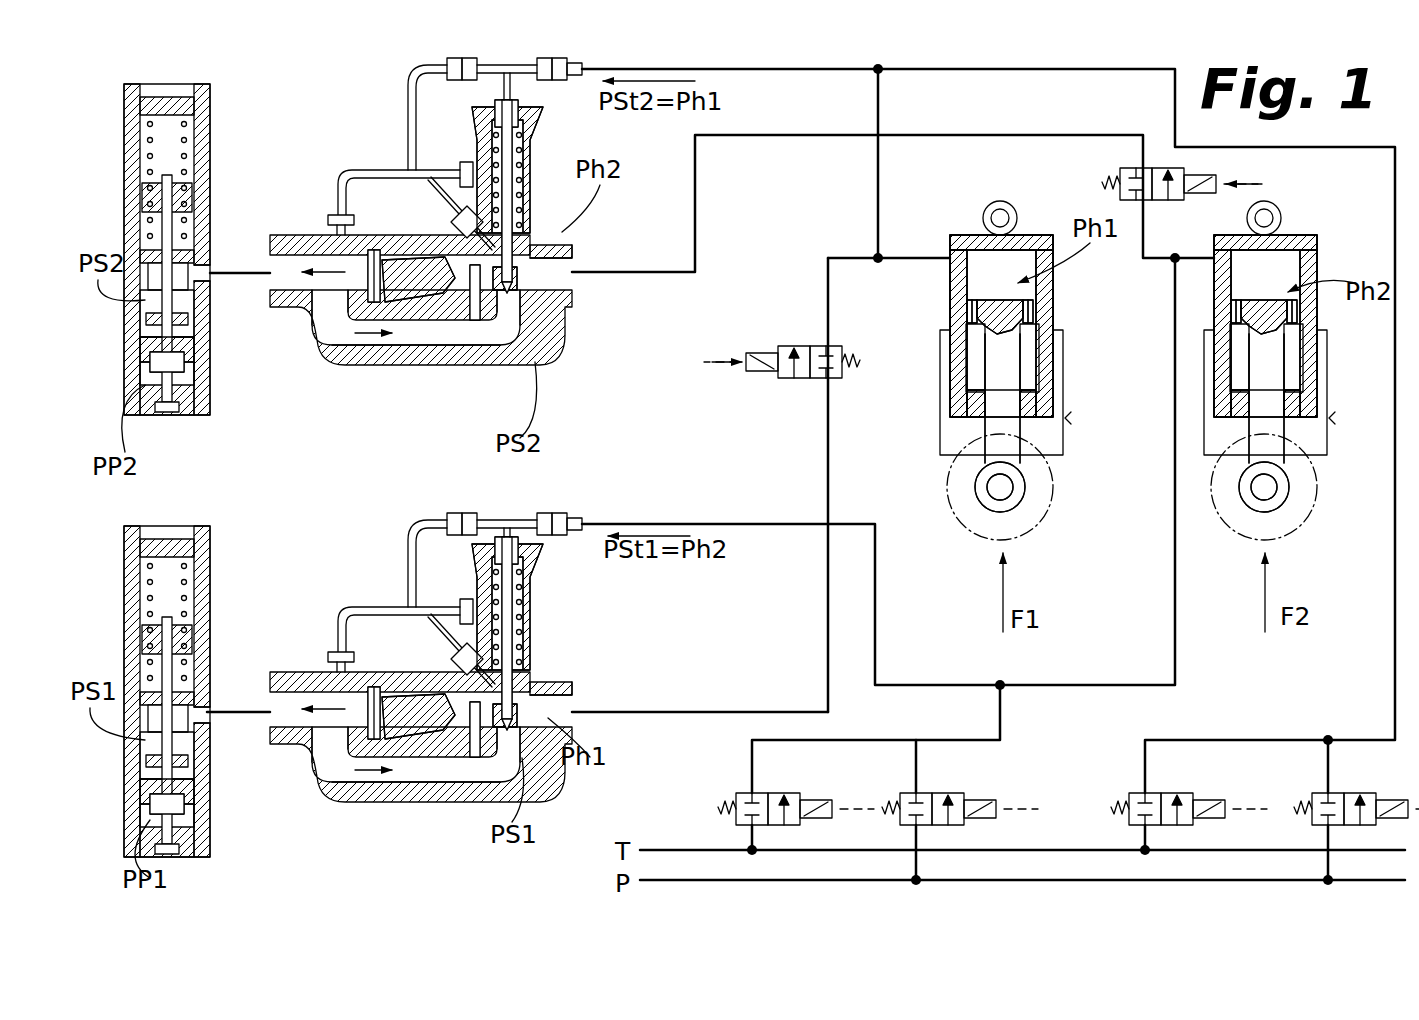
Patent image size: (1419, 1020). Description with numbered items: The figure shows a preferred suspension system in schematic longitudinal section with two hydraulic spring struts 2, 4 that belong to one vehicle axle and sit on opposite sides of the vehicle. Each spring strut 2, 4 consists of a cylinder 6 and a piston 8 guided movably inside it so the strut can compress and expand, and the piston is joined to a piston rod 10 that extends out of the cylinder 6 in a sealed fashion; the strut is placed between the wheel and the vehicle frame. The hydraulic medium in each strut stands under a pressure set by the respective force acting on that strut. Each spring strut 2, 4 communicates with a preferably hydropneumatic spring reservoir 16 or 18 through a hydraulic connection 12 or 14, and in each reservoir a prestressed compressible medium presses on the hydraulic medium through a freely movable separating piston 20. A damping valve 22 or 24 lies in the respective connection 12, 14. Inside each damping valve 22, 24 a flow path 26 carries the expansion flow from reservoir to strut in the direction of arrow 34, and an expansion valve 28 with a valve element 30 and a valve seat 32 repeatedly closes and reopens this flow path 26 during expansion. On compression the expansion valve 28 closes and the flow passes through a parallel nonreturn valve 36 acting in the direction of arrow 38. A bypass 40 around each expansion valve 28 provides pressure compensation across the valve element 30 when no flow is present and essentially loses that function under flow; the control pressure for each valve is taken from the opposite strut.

The hydraulic spring strut 2 is at (1072, 318).
The hydraulic spring strut 4 is at (1337, 300).
The cylinder 6 is at (957, 313).
The piston 8 is at (1000, 318).
The piston rod 10 is at (990, 375).
The hydraulic connection 12 is at (236, 705).
The hydraulic connection 14 is at (240, 282).
The spring reservoir 16 is at (216, 823).
The spring reservoir 18 is at (218, 381).
The separating piston 20 is at (150, 375).
The damping valve 22 is at (415, 805).
The damping valve 24 is at (455, 367).
The flow path 26 is at (418, 366).
The expansion valve 28 is at (522, 350).
The valve element 30 is at (548, 252).
The valve seat 32 is at (520, 305).
The arrow 34 is at (366, 346).
The nonreturn valve 36 is at (443, 258).
The arrow 38 is at (336, 238).
The bypass 40 is at (478, 322).